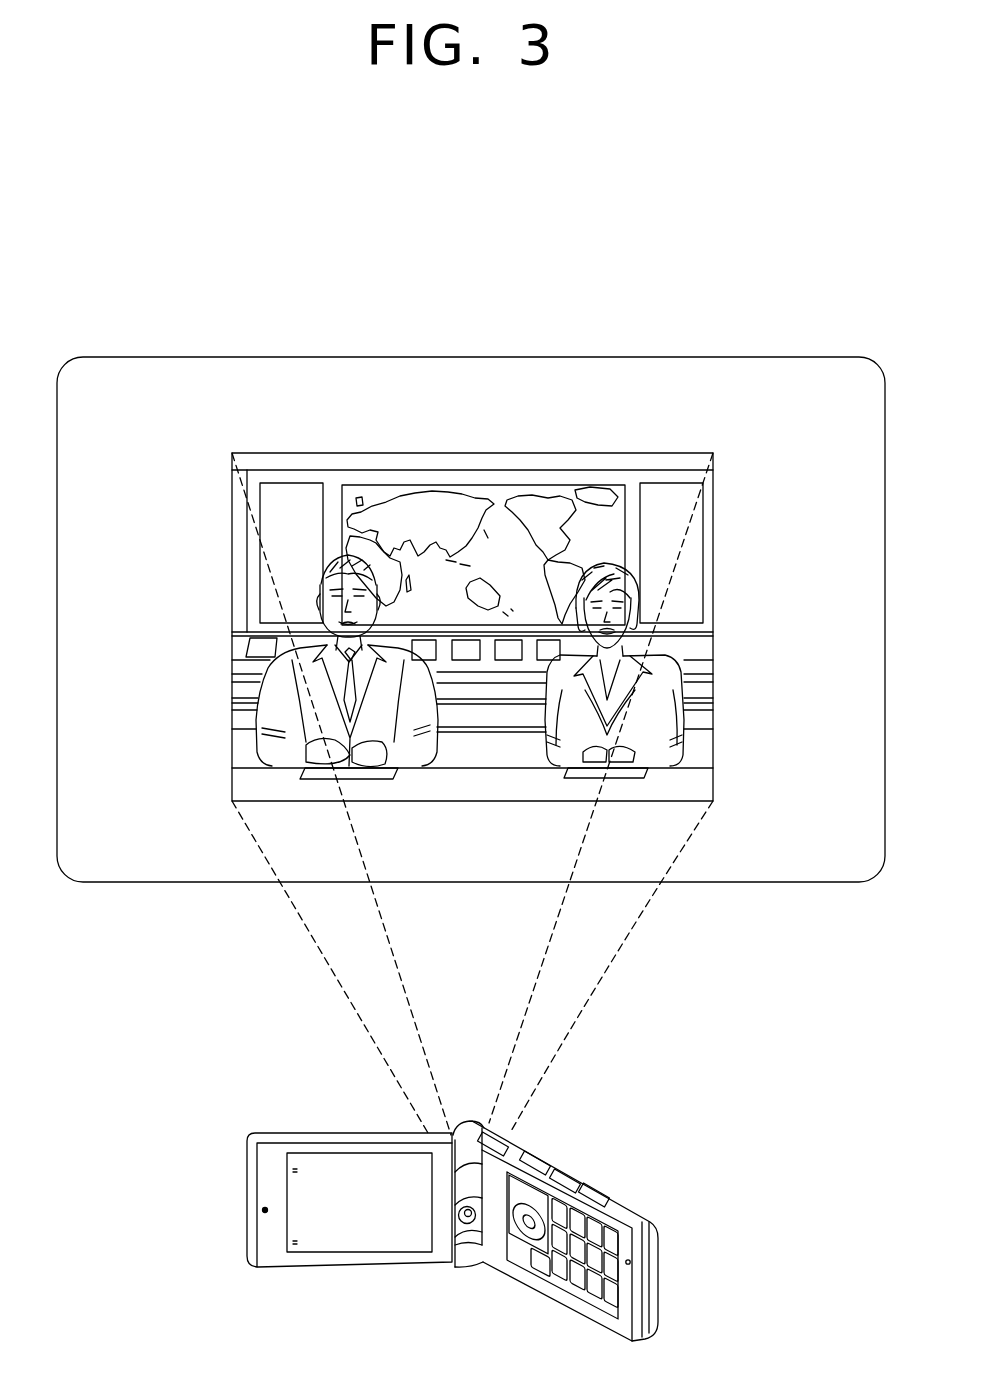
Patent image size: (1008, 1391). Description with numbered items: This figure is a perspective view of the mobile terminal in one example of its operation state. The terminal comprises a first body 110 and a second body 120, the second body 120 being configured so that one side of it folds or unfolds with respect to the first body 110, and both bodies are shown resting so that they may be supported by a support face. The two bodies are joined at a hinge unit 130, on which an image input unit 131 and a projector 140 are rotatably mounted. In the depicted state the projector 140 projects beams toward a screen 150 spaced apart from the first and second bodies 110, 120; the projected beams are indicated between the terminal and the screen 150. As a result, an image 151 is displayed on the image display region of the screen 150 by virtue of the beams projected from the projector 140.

The first body 110 is at (227, 1167).
The second body 120 is at (655, 1208).
The hinge unit 130 is at (471, 1255).
The image input unit 131 is at (458, 1227).
The projector 140 is at (472, 1190).
The screen 150 is at (204, 375).
The image 151 is at (414, 470).